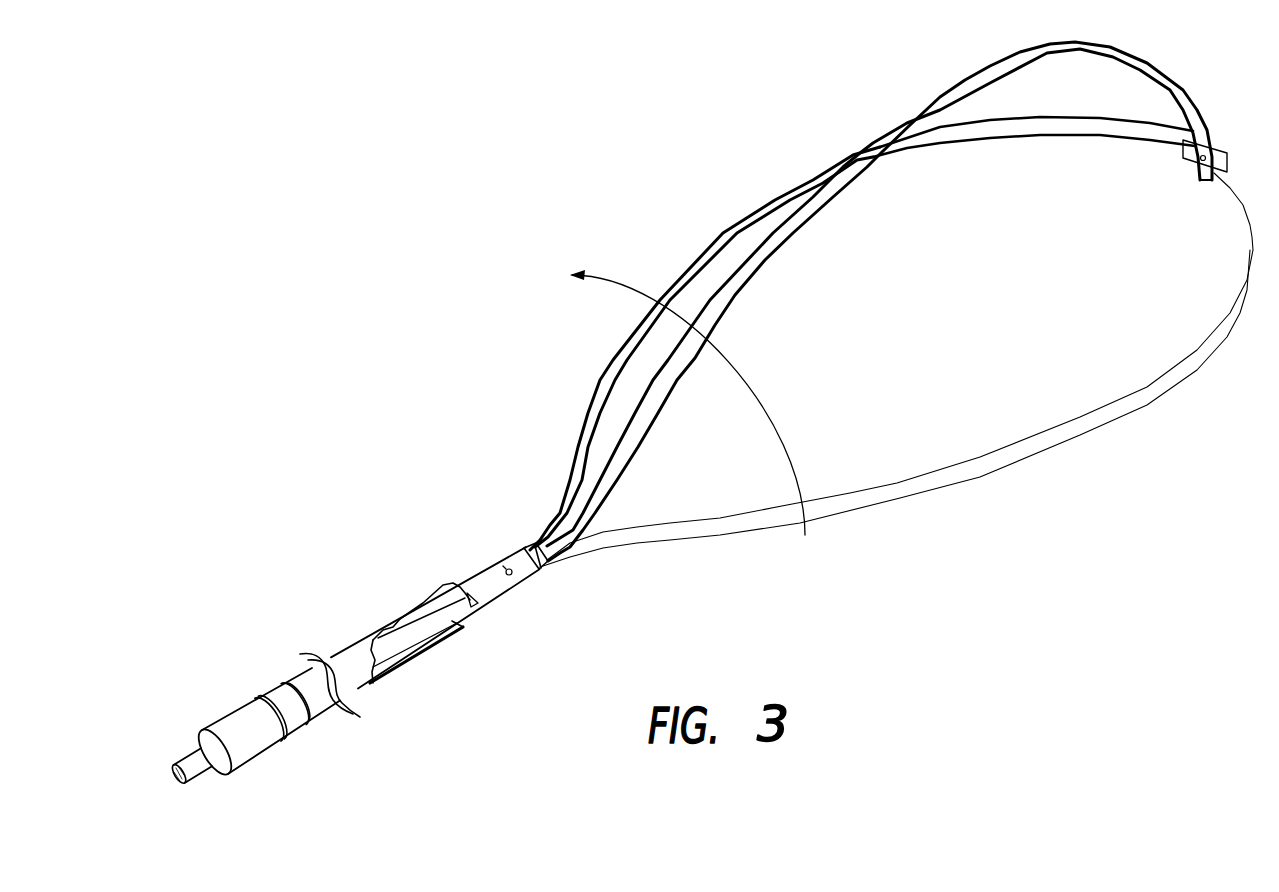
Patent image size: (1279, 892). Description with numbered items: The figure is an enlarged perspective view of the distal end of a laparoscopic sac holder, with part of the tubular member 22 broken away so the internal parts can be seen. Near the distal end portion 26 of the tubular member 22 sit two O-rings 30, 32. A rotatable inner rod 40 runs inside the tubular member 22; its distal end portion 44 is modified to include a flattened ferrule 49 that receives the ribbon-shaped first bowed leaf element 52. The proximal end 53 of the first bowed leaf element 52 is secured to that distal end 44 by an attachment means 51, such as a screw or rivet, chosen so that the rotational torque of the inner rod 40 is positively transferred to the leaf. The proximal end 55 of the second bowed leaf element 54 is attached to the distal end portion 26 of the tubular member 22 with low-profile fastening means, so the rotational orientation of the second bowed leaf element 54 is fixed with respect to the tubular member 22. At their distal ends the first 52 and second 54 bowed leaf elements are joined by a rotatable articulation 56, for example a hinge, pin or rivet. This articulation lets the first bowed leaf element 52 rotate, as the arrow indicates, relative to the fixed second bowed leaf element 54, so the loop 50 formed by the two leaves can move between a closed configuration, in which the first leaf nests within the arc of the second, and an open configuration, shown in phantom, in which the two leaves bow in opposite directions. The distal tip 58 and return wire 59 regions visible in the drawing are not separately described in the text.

The tubular member 22 is at (250, 724).
The distal end portion of the tubular member 26 is at (393, 612).
The O-ring 30 is at (277, 717).
The O-ring 32 is at (313, 707).
The inner rod 40 is at (198, 765).
The distal end portion of the inner rod 44 is at (430, 617).
The flattened ferrule 49 is at (498, 583).
The loop 50 is at (857, 87).
The attachment means 51 is at (515, 568).
The first bowed leaf element 52 is at (813, 213).
The proximal end of the first bowed leaf element 53 is at (577, 512).
The second bowed leaf element 54 is at (930, 147).
The proximal end of the second bowed leaf element 55 is at (596, 406).
The rotatable articulation 56 is at (1202, 162).
The distal tip of loop 58 is at (1203, 121).
The return wire 59 is at (1133, 130).